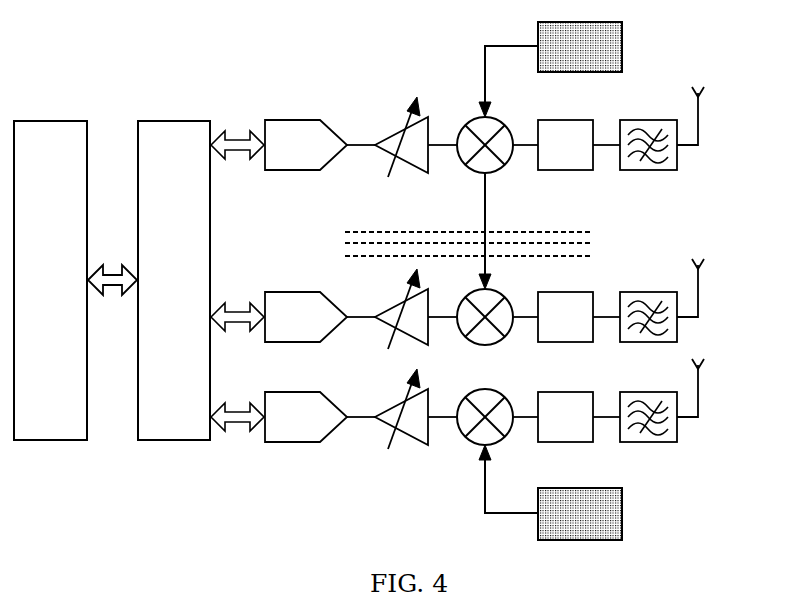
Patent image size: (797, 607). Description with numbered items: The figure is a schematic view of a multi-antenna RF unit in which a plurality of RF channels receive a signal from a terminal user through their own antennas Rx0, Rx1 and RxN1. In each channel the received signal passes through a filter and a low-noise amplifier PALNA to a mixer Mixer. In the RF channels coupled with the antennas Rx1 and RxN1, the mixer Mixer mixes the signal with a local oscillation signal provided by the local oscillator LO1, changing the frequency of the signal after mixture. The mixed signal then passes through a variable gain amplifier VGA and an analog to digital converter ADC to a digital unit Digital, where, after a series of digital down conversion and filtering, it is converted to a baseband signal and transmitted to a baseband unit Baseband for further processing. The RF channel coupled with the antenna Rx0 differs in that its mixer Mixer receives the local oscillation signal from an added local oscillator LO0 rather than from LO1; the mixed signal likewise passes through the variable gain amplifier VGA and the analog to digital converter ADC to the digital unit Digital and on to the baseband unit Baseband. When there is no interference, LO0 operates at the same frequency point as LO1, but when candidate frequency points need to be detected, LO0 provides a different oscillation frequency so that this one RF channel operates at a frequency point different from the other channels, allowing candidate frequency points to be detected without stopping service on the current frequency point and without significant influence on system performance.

The baseband unit Baseband is at (50, 280).
The digital unit Digital is at (174, 280).
The analog to digital converter ADC is at (320, 281).
The variable gain amplifier VGA is at (416, 284).
The mixer Mixer is at (511, 294).
The low-noise amplifier PALNA is at (579, 281).
The antenna RxN-1 RxN1 is at (701, 128).
The antenna Rx1 is at (697, 300).
The antenna Rx0 is at (697, 400).
The local oscillator LO1 is at (550, 155).
The local oscillator LO0 is at (550, 492).